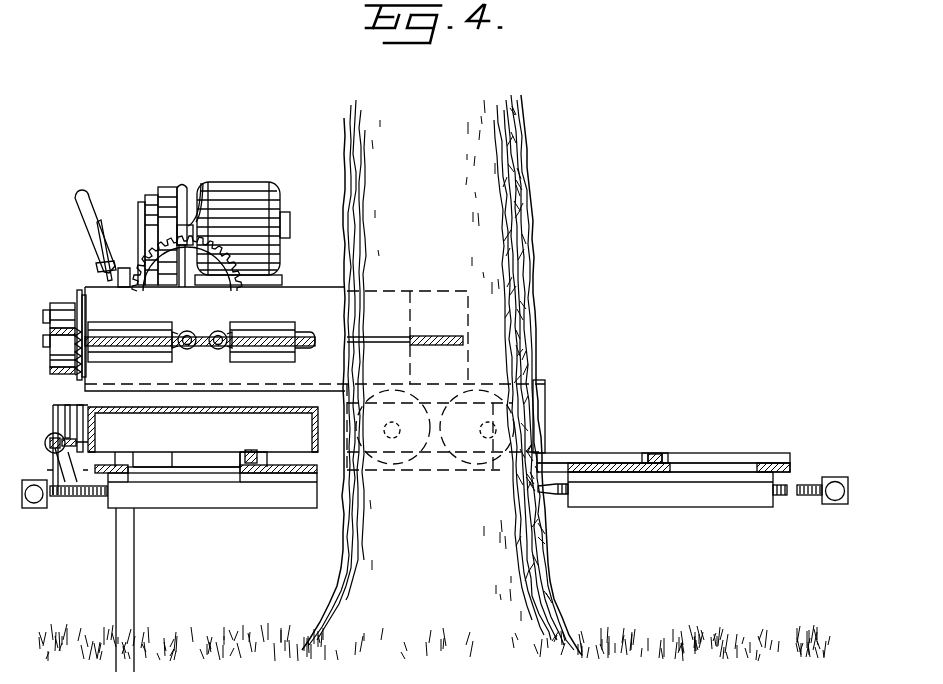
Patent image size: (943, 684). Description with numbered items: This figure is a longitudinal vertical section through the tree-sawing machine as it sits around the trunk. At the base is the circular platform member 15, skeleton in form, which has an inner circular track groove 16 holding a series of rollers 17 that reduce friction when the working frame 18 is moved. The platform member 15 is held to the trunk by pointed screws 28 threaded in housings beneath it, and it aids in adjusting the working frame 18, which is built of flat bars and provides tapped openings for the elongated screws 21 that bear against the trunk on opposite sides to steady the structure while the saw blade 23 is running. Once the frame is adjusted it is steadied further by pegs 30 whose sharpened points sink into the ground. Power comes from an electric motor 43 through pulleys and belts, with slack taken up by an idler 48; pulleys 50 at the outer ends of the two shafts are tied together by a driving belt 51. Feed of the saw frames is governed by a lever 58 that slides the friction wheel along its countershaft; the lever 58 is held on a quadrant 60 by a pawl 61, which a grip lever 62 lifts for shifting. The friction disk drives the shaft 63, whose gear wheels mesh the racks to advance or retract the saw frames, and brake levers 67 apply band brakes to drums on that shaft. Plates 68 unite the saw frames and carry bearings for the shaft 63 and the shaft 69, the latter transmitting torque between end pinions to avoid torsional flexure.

The platform member 15 is at (183, 470).
The inner circular track groove 16 is at (653, 457).
The rollers 17 is at (258, 452).
The working frame 18 is at (546, 412).
The elongated screws 21 is at (395, 432).
The saw blade 23 is at (437, 336).
The pointed screws 28 is at (37, 500).
The pegs 30 is at (137, 556).
The electric motor 43 is at (233, 193).
The idler 48 is at (62, 306).
The pulleys 50 is at (56, 366).
The driving belt 51 is at (72, 375).
The lever 58 is at (179, 230).
The quadrant 60 is at (148, 271).
The pawl 61 is at (148, 235).
The grip lever 62 is at (193, 195).
The shaft 63 is at (218, 333).
The brake levers 67 is at (90, 231).
The plates 68 is at (150, 347).
The shaft 69 is at (188, 333).